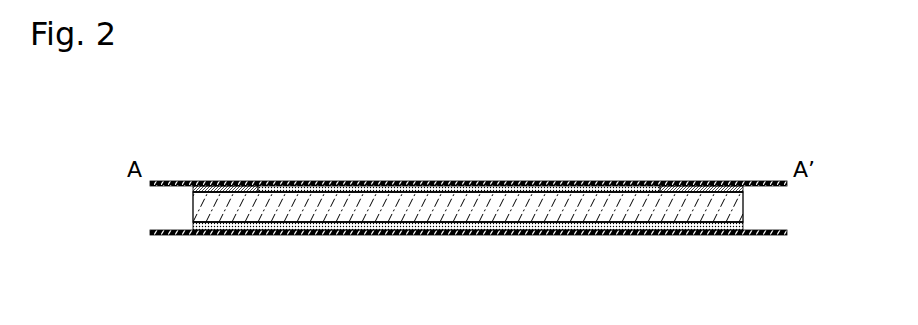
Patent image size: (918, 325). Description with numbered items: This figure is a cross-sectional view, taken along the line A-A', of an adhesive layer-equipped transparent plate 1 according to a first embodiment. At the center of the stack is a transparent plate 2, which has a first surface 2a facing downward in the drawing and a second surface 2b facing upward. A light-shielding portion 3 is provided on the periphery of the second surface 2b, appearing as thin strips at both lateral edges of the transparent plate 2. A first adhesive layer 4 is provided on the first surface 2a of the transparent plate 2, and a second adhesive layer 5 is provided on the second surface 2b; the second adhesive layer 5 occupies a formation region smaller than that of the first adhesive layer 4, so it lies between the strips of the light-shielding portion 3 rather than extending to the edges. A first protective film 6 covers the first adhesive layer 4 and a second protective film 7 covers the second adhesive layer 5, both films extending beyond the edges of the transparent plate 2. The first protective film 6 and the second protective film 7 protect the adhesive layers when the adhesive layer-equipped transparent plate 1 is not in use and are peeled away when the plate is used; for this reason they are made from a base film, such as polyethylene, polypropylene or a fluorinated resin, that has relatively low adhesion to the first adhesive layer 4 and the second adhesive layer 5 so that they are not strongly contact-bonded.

The adhesive layer-equipped transparent plate 1 is at (532, 150).
The transparent plate 2 is at (478, 205).
The first surface 2a is at (568, 223).
The second surface 2b is at (580, 191).
The light-shielding portion 3 is at (225, 186).
The first adhesive layer 4 is at (449, 231).
The second adhesive layer 5 is at (326, 186).
The first protective film 6 is at (168, 236).
The second protective film 7 is at (165, 180).